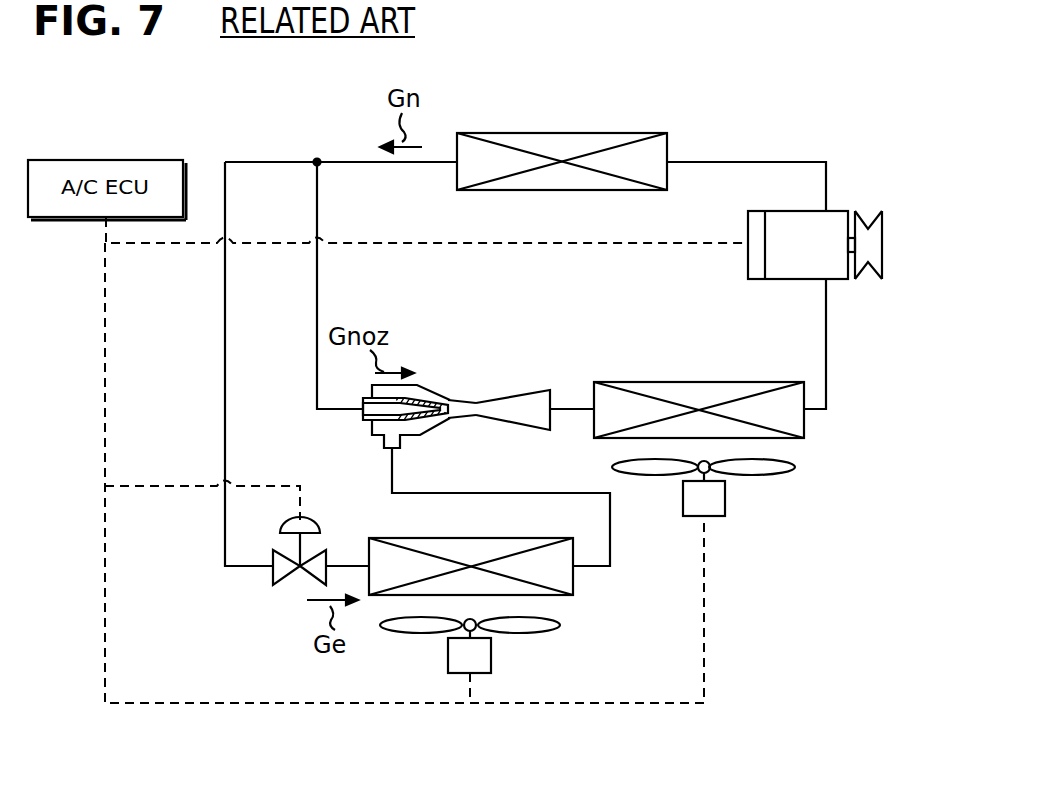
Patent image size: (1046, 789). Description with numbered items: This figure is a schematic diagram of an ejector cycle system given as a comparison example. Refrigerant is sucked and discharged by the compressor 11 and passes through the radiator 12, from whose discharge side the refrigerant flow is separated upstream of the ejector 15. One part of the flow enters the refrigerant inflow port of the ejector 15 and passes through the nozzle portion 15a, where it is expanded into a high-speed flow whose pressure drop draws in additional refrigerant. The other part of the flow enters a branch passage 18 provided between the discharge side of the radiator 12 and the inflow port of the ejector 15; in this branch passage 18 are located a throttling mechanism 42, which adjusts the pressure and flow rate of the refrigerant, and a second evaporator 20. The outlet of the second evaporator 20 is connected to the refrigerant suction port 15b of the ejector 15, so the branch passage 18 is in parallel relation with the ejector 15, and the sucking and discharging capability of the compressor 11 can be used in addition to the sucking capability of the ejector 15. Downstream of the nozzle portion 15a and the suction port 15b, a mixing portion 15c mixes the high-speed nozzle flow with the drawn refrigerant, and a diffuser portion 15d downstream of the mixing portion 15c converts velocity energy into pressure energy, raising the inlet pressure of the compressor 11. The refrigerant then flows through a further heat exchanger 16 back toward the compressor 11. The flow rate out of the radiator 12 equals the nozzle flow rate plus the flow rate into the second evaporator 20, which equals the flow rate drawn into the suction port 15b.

The compressor 11 is at (843, 211).
The radiator 12 is at (558, 133).
The ejector 15 is at (435, 386).
The nozzle portion 15a is at (420, 398).
The refrigerant suction port 15b is at (372, 437).
The mixing portion 15c is at (460, 410).
The diffuser portion 15d is at (517, 418).
The first evaporator 16 is at (806, 421).
The branch passage 18 is at (223, 388).
The second evaporator 20 is at (575, 581).
The throttling mechanism 42 is at (277, 551).